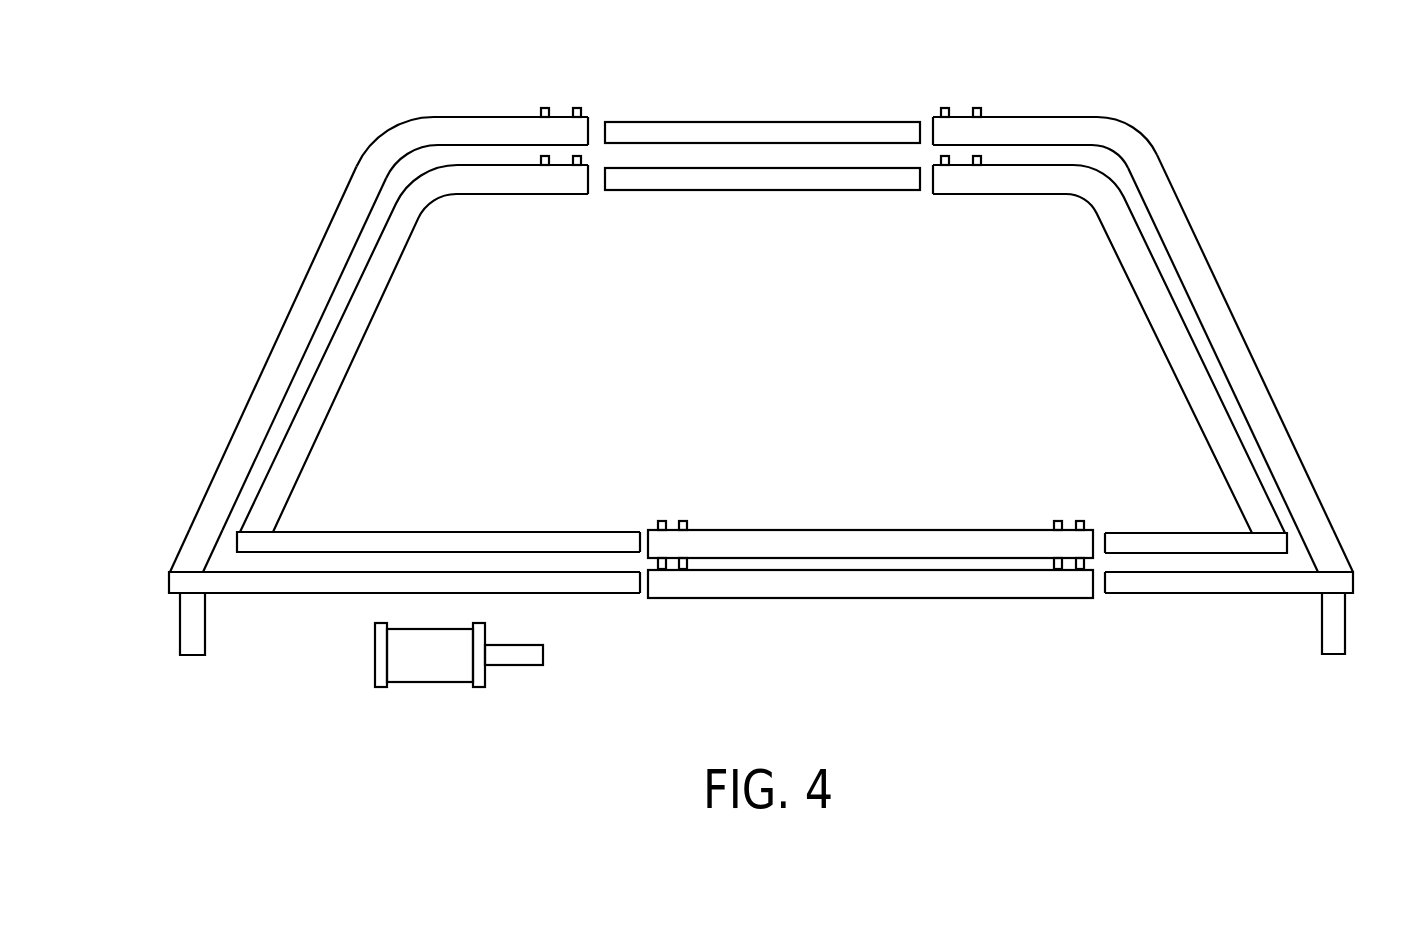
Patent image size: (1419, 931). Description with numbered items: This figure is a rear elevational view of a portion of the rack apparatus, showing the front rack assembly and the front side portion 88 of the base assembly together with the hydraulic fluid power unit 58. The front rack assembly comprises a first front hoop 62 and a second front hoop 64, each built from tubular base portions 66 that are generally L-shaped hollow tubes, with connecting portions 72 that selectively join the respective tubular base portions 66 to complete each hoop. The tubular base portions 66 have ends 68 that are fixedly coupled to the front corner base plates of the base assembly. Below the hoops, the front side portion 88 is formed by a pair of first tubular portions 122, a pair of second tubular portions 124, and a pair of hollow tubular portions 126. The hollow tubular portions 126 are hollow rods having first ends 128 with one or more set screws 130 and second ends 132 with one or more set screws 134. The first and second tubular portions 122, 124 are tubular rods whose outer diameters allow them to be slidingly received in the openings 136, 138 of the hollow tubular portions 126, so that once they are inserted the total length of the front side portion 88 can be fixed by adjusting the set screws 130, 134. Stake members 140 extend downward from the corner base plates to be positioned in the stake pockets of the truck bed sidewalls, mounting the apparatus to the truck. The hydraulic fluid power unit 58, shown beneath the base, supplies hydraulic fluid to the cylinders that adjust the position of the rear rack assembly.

The hydraulic fluid power unit 58 is at (476, 688).
The first front hoop 62 is at (242, 412).
The second front hoop 64 is at (405, 258).
The tubular base portions 66 is at (352, 188).
The ends 68 is at (192, 570).
The connecting portions 72 is at (817, 120).
The front side portion 88 is at (878, 600).
The first tubular portions 122 is at (510, 572).
The second tubular portions 124 is at (1225, 568).
The hollow tubular portions 126 is at (943, 568).
The first ends 128 is at (658, 560).
The set screws 130 is at (682, 522).
The second ends 132 is at (1080, 563).
The set screws 134 is at (1060, 522).
The openings 136 is at (642, 540).
The openings 138 is at (1100, 540).
The stake members 140 is at (180, 628).